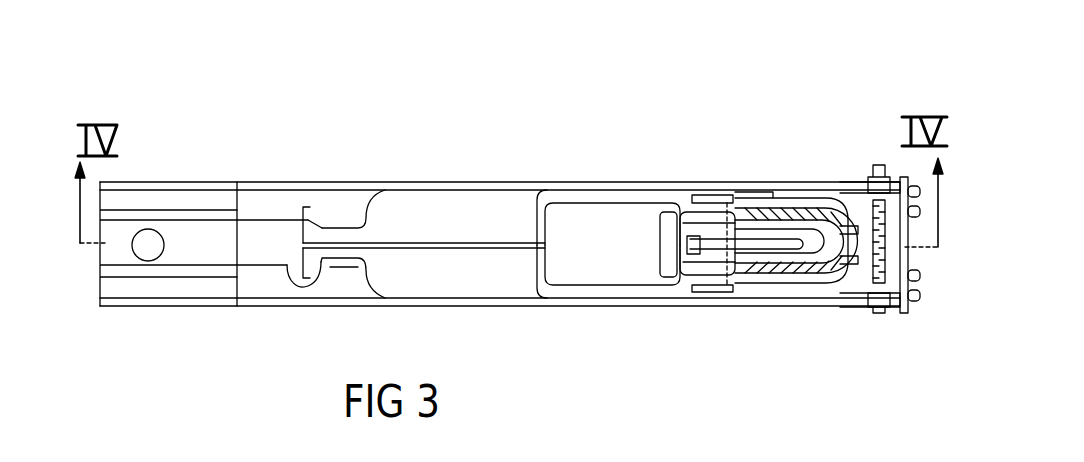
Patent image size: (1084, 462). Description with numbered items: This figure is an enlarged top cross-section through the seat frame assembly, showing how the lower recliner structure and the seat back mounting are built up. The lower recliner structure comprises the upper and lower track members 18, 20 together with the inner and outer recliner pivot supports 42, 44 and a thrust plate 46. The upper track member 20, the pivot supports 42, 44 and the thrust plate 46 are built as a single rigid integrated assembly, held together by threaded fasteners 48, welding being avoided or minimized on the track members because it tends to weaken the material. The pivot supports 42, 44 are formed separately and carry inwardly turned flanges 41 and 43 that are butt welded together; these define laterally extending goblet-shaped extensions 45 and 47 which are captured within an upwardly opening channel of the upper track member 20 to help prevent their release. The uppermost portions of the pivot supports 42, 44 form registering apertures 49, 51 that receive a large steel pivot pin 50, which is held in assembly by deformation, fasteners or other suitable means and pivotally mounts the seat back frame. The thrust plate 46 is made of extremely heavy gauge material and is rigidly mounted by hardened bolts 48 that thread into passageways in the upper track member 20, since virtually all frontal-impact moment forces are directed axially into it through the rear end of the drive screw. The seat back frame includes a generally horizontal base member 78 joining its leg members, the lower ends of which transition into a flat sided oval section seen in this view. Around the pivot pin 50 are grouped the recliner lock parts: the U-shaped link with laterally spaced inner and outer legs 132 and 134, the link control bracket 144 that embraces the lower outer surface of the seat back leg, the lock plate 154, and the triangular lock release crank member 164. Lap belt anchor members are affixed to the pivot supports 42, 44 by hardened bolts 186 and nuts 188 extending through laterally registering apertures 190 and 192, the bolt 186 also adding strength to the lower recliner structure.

The lower track member 18 is at (168, 197).
The upper track member 20 is at (268, 285).
The inwardly turned flange 41 is at (433, 205).
The inner recliner pivot support 42 is at (588, 190).
The inwardly turned flange 43 is at (432, 275).
The outer recliner pivot support 44 is at (588, 295).
The goblet-shaped extension 45 is at (315, 220).
The thrust plate 46 is at (906, 305).
The goblet-shaped extension 47 is at (322, 275).
The threaded fasteners 48 is at (918, 212).
The registering aperture 49 is at (727, 195).
The pivot pin 50 is at (712, 197).
The registering aperture 51 is at (705, 295).
The base member 78 is at (782, 214).
The inner leg 132 is at (830, 285).
The outer leg 134 is at (812, 200).
The link control bracket 144 is at (667, 228).
The lock plate 154 is at (670, 280).
The lock release crank member 164 is at (758, 250).
The hardened bolt 186 is at (880, 313).
The nut 188 is at (868, 178).
The laterally registering aperture 190 is at (845, 180).
The laterally registering aperture 192 is at (860, 290).